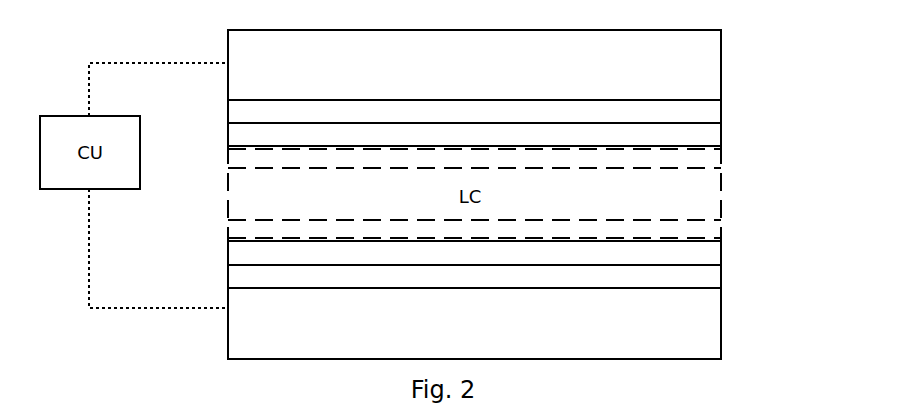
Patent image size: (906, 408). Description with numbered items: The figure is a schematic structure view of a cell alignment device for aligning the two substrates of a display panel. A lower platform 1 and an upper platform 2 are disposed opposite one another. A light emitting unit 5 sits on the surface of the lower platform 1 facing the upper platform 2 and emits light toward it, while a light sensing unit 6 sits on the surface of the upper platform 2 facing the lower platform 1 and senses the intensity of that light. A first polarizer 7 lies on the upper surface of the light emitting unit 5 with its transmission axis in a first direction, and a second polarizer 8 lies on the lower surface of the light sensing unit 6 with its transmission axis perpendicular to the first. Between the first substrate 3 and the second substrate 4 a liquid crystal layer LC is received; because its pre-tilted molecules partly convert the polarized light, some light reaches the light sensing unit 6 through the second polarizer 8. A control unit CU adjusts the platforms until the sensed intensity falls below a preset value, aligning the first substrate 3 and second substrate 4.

The lower platform 1 is at (722, 316).
The upper platform 2 is at (722, 80).
The first substrate 3 is at (228, 239).
The second substrate 4 is at (228, 163).
The light emitting unit 5 is at (722, 283).
The light sensing unit 6 is at (722, 116).
The first polarizer 7 is at (722, 255).
The second polarizer 8 is at (722, 146).